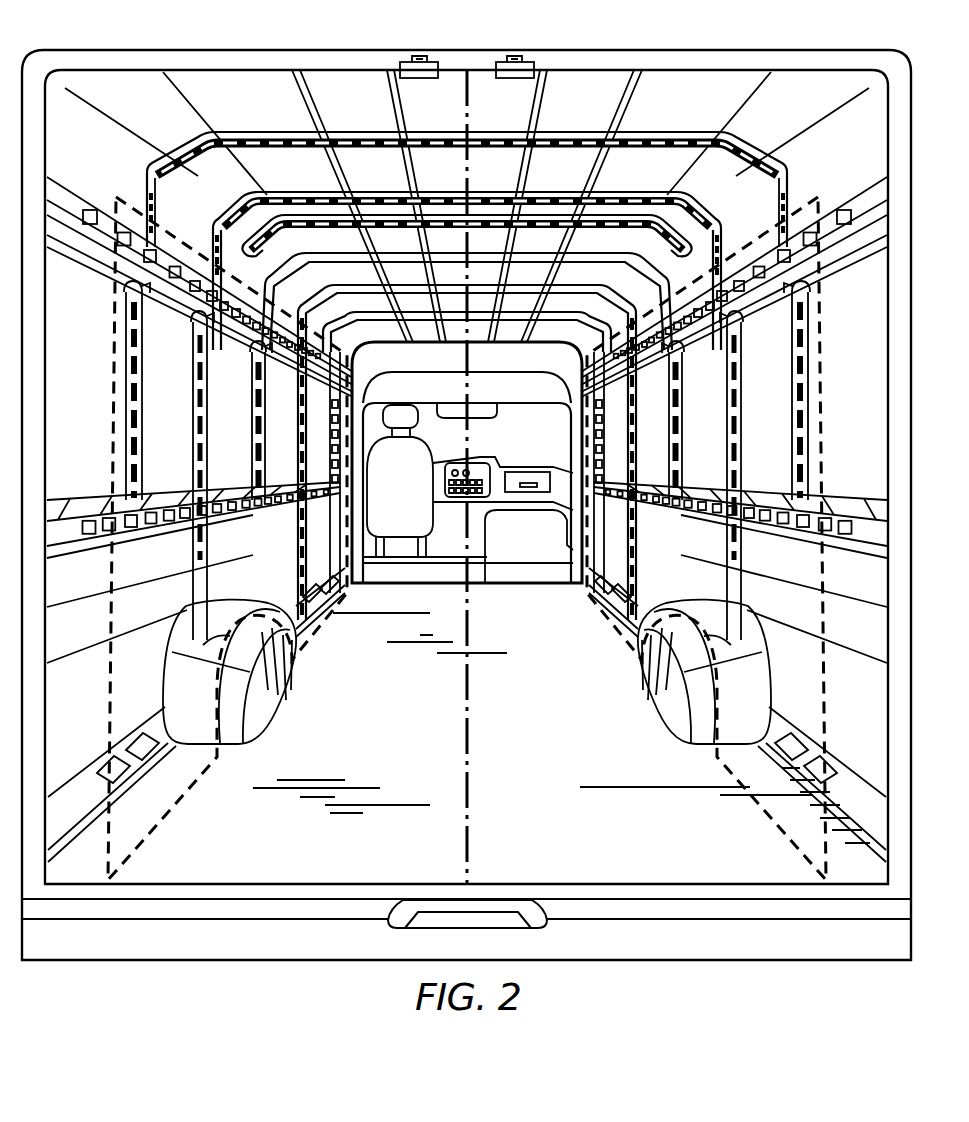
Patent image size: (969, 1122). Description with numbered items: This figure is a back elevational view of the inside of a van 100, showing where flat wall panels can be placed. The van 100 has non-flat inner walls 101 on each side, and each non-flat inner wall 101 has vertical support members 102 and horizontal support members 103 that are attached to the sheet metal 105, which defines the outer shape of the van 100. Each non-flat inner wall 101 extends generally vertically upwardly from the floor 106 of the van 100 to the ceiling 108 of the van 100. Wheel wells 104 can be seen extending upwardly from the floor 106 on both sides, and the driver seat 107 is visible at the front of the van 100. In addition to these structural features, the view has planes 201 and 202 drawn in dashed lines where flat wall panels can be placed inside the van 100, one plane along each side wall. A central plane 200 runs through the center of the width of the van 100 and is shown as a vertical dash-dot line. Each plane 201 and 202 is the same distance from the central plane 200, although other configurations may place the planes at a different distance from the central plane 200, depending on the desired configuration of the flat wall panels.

The van 100 is at (284, 46).
The non-flat inner wall 101 is at (172, 366).
The vertical support member 102 is at (200, 398).
The horizontal support member 103 is at (190, 268).
The wheel well 104 is at (660, 680).
The sheet metal 105 is at (246, 455).
The floor 106 is at (204, 745).
The driver seat 107 is at (422, 437).
The ceiling 108 is at (497, 163).
The central plane 200 is at (472, 612).
The plane 201 is at (114, 365).
The plane 202 is at (821, 322).